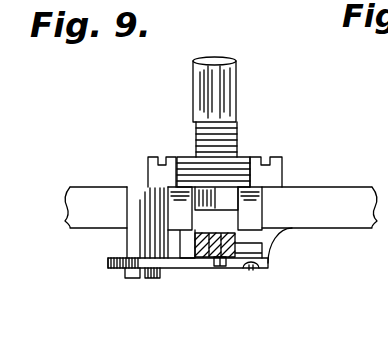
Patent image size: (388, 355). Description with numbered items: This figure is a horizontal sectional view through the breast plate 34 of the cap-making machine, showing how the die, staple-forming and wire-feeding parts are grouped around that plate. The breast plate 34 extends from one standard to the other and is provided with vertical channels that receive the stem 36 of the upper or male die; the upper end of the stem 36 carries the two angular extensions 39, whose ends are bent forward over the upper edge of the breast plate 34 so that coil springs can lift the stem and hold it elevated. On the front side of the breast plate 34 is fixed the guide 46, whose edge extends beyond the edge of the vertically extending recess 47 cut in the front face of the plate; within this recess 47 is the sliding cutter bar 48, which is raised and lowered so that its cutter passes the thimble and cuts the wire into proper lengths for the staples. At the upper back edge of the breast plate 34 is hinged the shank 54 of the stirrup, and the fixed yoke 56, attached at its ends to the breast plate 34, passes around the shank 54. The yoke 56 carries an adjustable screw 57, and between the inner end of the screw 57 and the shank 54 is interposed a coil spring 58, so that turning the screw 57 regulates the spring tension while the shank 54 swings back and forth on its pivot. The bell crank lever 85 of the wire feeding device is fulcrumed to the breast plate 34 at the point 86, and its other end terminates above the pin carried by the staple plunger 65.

The breast plate 34 is at (78, 182).
The stem 36 is at (262, 197).
The angular extensions 39 is at (183, 231).
The guide 46 is at (268, 260).
The vertically extending recess 47 is at (272, 243).
The cutter bar 48 is at (262, 250).
The shank 54 is at (205, 178).
The yoke 56 is at (236, 153).
The adjustable screw 57 is at (222, 59).
The coil spring 58 is at (236, 130).
The staple plunger 65 is at (221, 268).
The bell crank lever 85 is at (183, 270).
The fulcrum point 86 is at (136, 259).